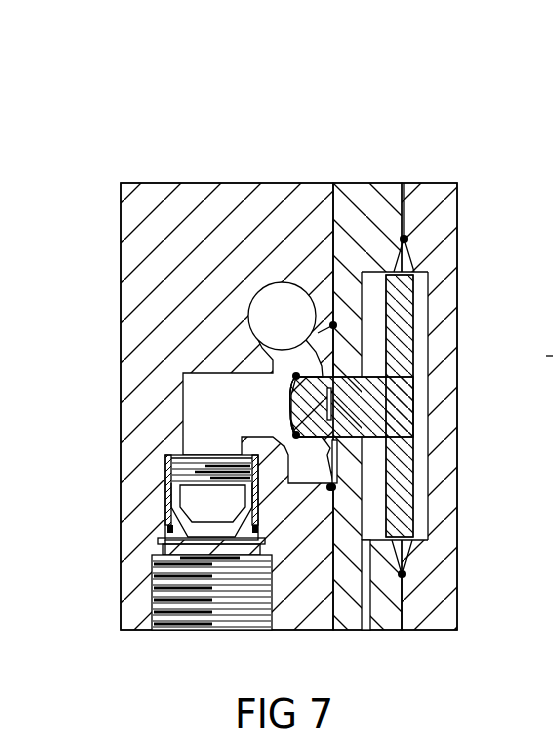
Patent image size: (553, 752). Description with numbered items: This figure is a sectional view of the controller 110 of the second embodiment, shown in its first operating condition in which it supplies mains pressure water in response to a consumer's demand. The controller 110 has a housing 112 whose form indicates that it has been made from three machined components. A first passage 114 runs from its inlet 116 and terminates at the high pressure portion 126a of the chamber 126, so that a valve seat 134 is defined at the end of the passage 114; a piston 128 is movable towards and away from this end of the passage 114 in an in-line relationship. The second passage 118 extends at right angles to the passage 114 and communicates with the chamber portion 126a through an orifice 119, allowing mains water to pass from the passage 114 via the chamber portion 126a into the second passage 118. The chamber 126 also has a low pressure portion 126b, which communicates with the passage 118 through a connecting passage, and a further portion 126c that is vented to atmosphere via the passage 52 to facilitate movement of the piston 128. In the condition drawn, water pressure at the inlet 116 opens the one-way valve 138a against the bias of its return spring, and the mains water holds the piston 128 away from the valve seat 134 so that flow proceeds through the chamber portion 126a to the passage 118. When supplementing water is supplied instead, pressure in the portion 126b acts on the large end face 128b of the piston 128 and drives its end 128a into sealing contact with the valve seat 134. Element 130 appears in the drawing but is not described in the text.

The controller 110 is at (337, 110).
The housing 112 is at (177, 207).
The first passage 114 is at (233, 593).
The inlet 116 is at (175, 630).
The second passage 118 is at (270, 300).
The orifice 119 is at (268, 356).
The chamber 126 is at (372, 280).
The high pressure portion of chamber 126a is at (471, 337).
The low pressure portion of chamber 126b is at (437, 483).
The portion of chamber 126c is at (469, 582).
The piston 128 is at (296, 377).
The end of piston 128a is at (348, 418).
The large end face of piston 128b is at (413, 313).
The bore 130 is at (320, 345).
The valve seat 134 is at (290, 386).
The one-way valve 138a is at (230, 503).
The passage 52 is at (365, 622).